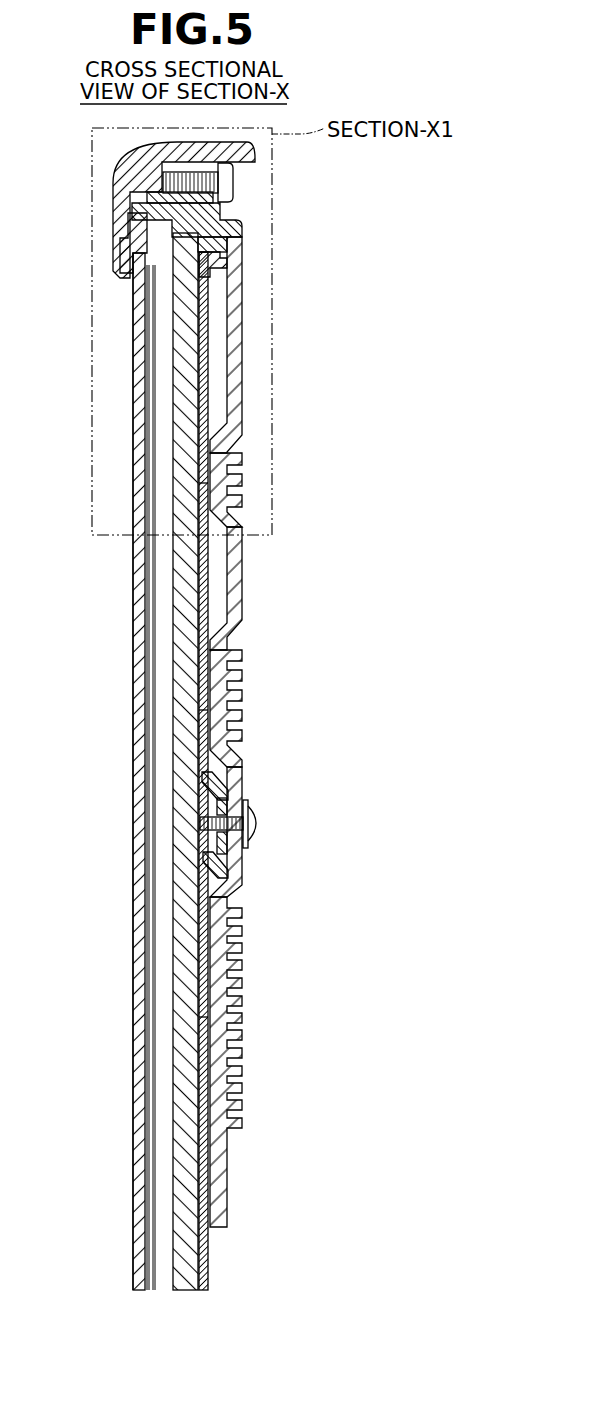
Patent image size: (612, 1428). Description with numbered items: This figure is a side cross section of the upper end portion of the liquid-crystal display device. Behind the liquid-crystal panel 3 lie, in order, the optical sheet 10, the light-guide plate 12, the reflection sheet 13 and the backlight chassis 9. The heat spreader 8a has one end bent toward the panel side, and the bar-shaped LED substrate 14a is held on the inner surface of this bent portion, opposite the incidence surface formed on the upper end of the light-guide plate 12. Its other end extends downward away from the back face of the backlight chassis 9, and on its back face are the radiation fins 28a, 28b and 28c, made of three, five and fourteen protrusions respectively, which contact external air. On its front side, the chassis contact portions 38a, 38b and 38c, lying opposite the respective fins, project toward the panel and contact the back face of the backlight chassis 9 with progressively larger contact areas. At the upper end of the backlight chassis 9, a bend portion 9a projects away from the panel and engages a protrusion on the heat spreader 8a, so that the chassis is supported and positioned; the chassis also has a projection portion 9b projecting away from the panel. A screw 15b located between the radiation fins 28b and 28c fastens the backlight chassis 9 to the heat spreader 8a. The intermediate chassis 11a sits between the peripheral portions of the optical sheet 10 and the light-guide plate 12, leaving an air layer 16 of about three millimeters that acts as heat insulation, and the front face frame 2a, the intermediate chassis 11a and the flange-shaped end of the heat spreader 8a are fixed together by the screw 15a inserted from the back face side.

The front face frame 2a is at (118, 172).
The intermediate chassis 11a is at (130, 230).
The screw 15a is at (235, 180).
The LED substrate 14a is at (243, 248).
The bend portion 9a is at (222, 290).
The heat spreader 8a is at (246, 357).
The chassis contact portion 38a is at (210, 483).
The radiation fin 28a is at (243, 470).
The backlight chassis 9 is at (216, 565).
The optical sheet 10 is at (140, 597).
The chassis contact portion 38b is at (208, 710).
The radiation fin 28b is at (241, 700).
The liquid-crystal panel 3 is at (138, 785).
The reflection sheet 13 is at (214, 797).
The screw 15b is at (263, 822).
The projection portion 9b is at (215, 865).
The chassis contact portion 38c is at (210, 1017).
The radiation fin 28c is at (243, 1002).
The air layer 16 is at (163, 1080).
The light-guide plate 12 is at (183, 1210).